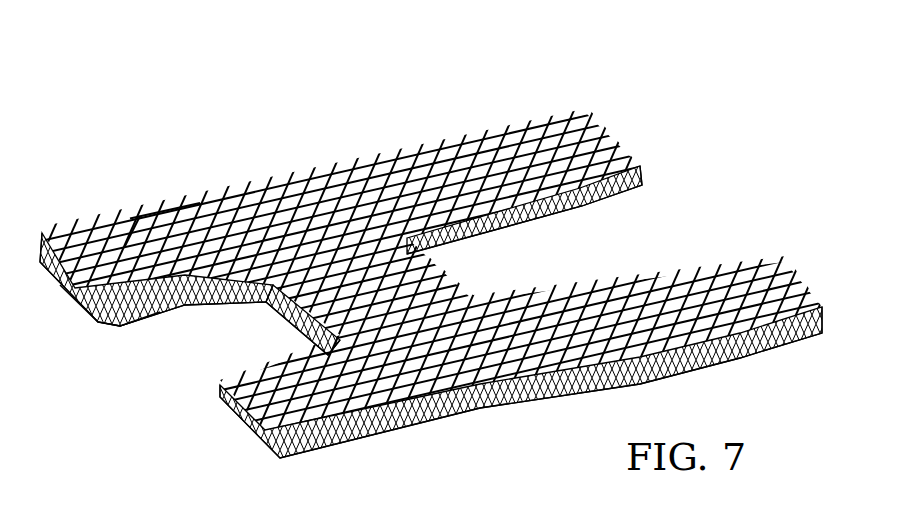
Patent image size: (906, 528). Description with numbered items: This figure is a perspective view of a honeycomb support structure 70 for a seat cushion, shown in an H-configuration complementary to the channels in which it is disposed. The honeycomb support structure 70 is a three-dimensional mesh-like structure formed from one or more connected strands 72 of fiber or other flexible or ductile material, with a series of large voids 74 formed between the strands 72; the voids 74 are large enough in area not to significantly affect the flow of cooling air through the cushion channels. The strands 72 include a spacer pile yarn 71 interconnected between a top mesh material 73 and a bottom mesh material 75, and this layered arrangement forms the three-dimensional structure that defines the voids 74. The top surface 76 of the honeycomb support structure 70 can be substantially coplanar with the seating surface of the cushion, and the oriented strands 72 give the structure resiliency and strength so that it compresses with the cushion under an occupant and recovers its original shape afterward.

The honeycomb support structure 70 is at (349, 131).
The spacer pile yarn 71 is at (73, 297).
The strands 72 is at (165, 212).
The top mesh material 73 is at (125, 223).
The voids 74 is at (484, 145).
The bottom mesh material 75 is at (118, 318).
The top surface 76 is at (285, 176).